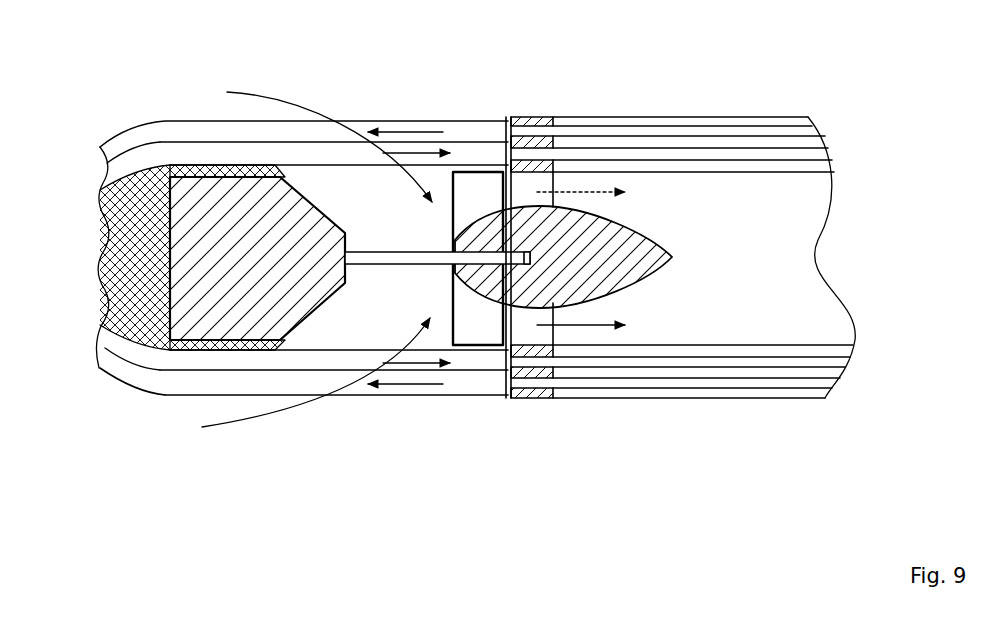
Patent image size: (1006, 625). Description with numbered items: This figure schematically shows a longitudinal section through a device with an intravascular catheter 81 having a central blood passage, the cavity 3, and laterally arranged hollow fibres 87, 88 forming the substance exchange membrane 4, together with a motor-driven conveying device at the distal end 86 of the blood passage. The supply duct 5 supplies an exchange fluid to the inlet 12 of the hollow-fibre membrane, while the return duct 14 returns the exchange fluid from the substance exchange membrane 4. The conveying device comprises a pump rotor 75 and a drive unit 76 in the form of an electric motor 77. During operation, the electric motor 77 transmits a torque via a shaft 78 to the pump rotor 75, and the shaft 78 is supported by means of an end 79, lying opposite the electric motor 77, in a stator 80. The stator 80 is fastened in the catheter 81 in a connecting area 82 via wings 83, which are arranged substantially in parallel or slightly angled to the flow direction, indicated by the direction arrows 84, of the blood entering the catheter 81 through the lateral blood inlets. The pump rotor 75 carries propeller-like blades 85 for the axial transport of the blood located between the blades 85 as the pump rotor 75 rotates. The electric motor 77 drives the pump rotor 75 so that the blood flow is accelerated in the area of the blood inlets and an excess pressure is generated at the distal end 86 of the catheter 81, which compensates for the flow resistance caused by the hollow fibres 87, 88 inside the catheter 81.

The cavity 3 is at (792, 209).
The substance exchange membrane 4 is at (764, 130).
The supply duct 5 is at (200, 157).
The inlet 12 is at (504, 368).
The return duct 14 is at (230, 130).
The pump rotor 75 is at (493, 232).
The drive unit 76 is at (165, 162).
The electric motor 77 is at (207, 313).
The shaft 78 is at (385, 258).
The end 79 is at (532, 258).
The stator 80 is at (612, 236).
The catheter 81 is at (692, 118).
The connecting area 82 is at (550, 114).
The wings 83 is at (540, 328).
The direction arrows 84 is at (590, 322).
The blades 85 is at (490, 327).
The distal end 86 is at (288, 420).
The hollow fibres 87 is at (648, 120).
The hollow fibres 88 is at (765, 393).